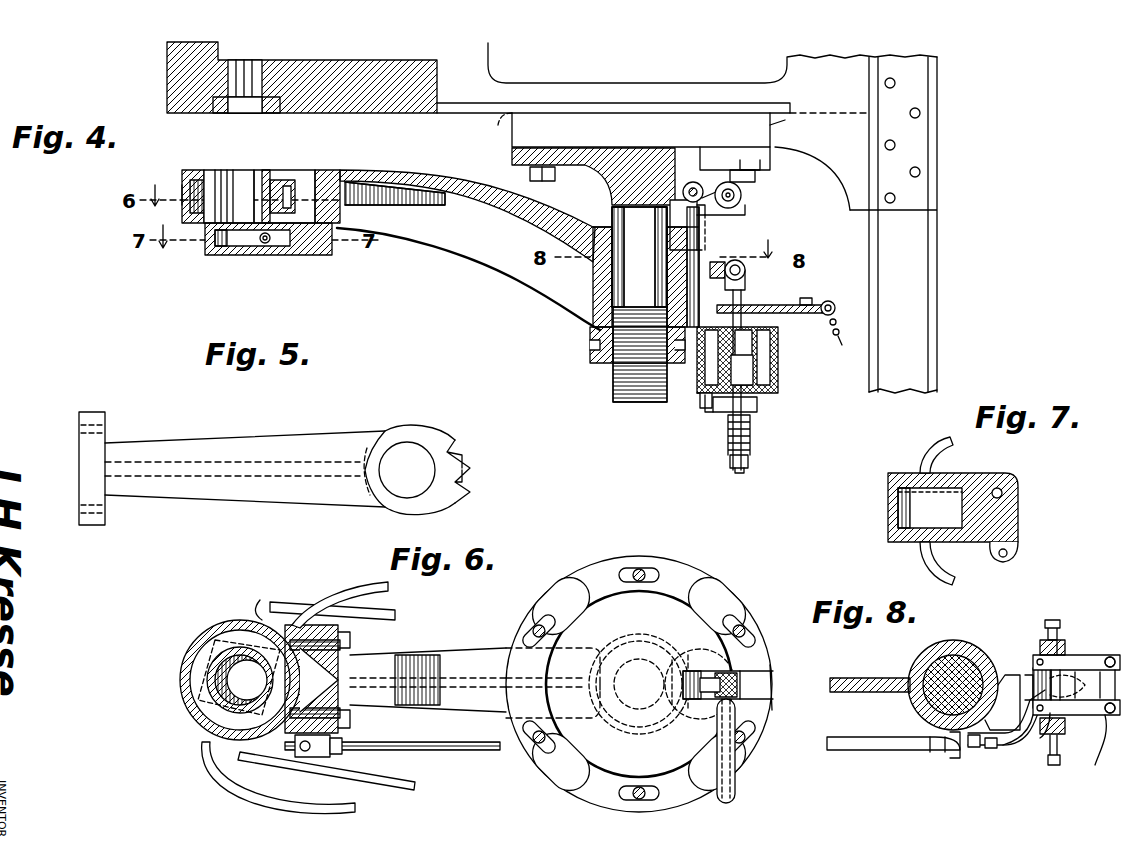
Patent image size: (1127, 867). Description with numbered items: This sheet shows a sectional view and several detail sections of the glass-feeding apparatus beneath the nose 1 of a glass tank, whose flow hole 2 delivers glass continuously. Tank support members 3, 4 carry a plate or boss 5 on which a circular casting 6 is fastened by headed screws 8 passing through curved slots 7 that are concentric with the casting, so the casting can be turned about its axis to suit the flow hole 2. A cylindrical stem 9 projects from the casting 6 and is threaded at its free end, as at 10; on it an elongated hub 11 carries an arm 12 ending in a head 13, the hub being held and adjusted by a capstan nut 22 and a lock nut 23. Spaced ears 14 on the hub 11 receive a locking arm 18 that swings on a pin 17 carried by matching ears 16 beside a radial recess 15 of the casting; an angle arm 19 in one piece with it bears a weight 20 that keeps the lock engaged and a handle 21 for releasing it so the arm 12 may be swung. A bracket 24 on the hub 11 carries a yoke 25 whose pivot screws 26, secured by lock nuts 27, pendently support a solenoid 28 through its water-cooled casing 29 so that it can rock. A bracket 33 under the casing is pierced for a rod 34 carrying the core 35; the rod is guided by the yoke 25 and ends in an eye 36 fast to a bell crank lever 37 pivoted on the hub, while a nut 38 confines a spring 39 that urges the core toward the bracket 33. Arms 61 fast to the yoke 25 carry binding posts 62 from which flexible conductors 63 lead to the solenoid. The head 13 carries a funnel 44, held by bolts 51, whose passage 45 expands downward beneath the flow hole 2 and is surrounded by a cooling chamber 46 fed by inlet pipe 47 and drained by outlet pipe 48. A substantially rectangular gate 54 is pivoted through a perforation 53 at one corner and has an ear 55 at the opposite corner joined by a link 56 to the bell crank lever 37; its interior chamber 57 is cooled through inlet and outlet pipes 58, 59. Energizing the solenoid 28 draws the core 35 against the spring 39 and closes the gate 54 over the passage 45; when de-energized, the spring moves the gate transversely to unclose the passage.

In FIG. 4, the nose 1 is at (343, 100).
In FIG. 4, the flow hole 2 is at (255, 110).
In FIG. 4, the support member 3 is at (920, 258).
In FIG. 4, the support member 4 is at (656, 100).
In FIG. 4, the plate or boss 5 is at (684, 161).
In FIG. 4, the casting 6 is at (510, 160).
In FIG. 6, the casting 6 is at (639, 684).
In FIG. 6, the curved slots 7 is at (612, 577).
In FIG. 4, the headed screws 8 is at (545, 181).
In FIG. 6, the headed screws 8 is at (639, 568).
In FIG. 4, the stem 9 is at (639, 257).
In FIG. 6, the stem 9 is at (637, 658).
In FIG. 8, the stem 9 is at (952, 660).
In FIG. 4, the threaded end 10 is at (620, 400).
In FIG. 4, the hub 11 is at (593, 290).
In FIG. 5, the hub 11 is at (405, 438).
In FIG. 6, the hub 11 is at (648, 735).
In FIG. 8, the hub 11 is at (925, 660).
In FIG. 4, the arm 12 is at (472, 232).
In FIG. 5, the arm 12 is at (270, 450).
In FIG. 6, the arm 12 is at (450, 665).
In FIG. 8, the arm 12 is at (870, 678).
In FIG. 4, the head 13 is at (328, 180).
In FIG. 5, the head 13 is at (105, 437).
In FIG. 4, the ears 14 is at (705, 242).
In FIG. 5, the ears 14 is at (466, 466).
In FIG. 4, the radial recess 15 is at (728, 160).
In FIG. 6, the radial recess 15 is at (735, 688).
In FIG. 4, the matching ears 16 is at (700, 200).
In FIG. 6, the matching ears 16 is at (695, 665).
In FIG. 4, the pin 17 is at (700, 175).
In FIG. 4, the arm 18 is at (670, 213).
In FIG. 4, the angle arm 19 is at (765, 155).
In FIG. 6, the angle arm 19 is at (735, 675).
In FIG. 4, the weight 20 is at (742, 193).
In FIG. 6, the weight 20 is at (742, 686).
In FIG. 4, the handle 21 is at (745, 207).
In FIG. 6, the handle 21 is at (736, 794).
In FIG. 4, the nut 22 is at (590, 335).
In FIG. 4, the lock nut 23 is at (590, 358).
In FIG. 4, the bracket 24 is at (743, 293).
In FIG. 8, the bracket 24 is at (985, 745).
In FIG. 4, the yoke 25 is at (760, 315).
In FIG. 8, the yoke 25 is at (1070, 652).
In FIG. 8, the pivot screws 26 is at (1053, 620).
In FIG. 8, the lock nuts 27 is at (1040, 642).
In FIG. 4, the solenoid 28 is at (780, 380).
In FIG. 4, the casing 29 is at (690, 370).
In FIG. 6, the casing 29 is at (775, 700).
In FIG. 8, the casing 29 is at (1028, 745).
In FIG. 4, the bracket 33 is at (712, 412).
In FIG. 4, the rod 34 is at (760, 405).
In FIG. 4, the core 35 is at (760, 355).
In FIG. 4, the eye 36 is at (746, 278).
In FIG. 8, the eye 36 is at (1033, 678).
In FIG. 4, the bell crank lever 37 is at (735, 270).
In FIG. 8, the bell crank lever 37 is at (1000, 748).
In FIG. 4, the nut 38 is at (752, 462).
In FIG. 4, the spring 39 is at (755, 433).
In FIG. 4, the funnel 44 is at (192, 172).
In FIG. 4, the passage 45 is at (246, 178).
In FIG. 6, the passage 45 is at (210, 700).
In FIG. 4, the chamber 46 is at (183, 200).
In FIG. 6, the chamber 46 is at (182, 678).
In FIG. 6, the inlet pipe 47 is at (260, 770).
In FIG. 6, the outlet pipe 48 is at (290, 605).
In FIG. 4, the bolts 51 is at (395, 199).
In FIG. 6, the perforation 53 is at (345, 665).
In FIG. 7, the perforation 53 is at (1003, 493).
In FIG. 4, the gate 54 is at (325, 257).
In FIG. 7, the gate 54 is at (1020, 528).
In FIG. 7, the ear 55 is at (1012, 560).
In FIG. 8, the link 56 is at (895, 750).
In FIG. 4, the interior chamber 57 is at (220, 257).
In FIG. 7, the interior chamber 57 is at (900, 515).
In FIG. 6, the inlet pipe 58 is at (322, 810).
In FIG. 7, the inlet pipe 58 is at (918, 562).
In FIG. 4, the outlet pipe 59 is at (264, 248).
In FIG. 6, the outlet pipe 59 is at (360, 592).
In FIG. 7, the outlet pipe 59 is at (925, 455).
In FIG. 4, the arms 61 is at (840, 312).
In FIG. 8, the arms 61 is at (1100, 760).
In FIG. 4, the binding posts 62 is at (815, 300).
In FIG. 8, the binding posts 62 is at (1110, 657).
In FIG. 4, the flexible conductors 63 is at (842, 336).